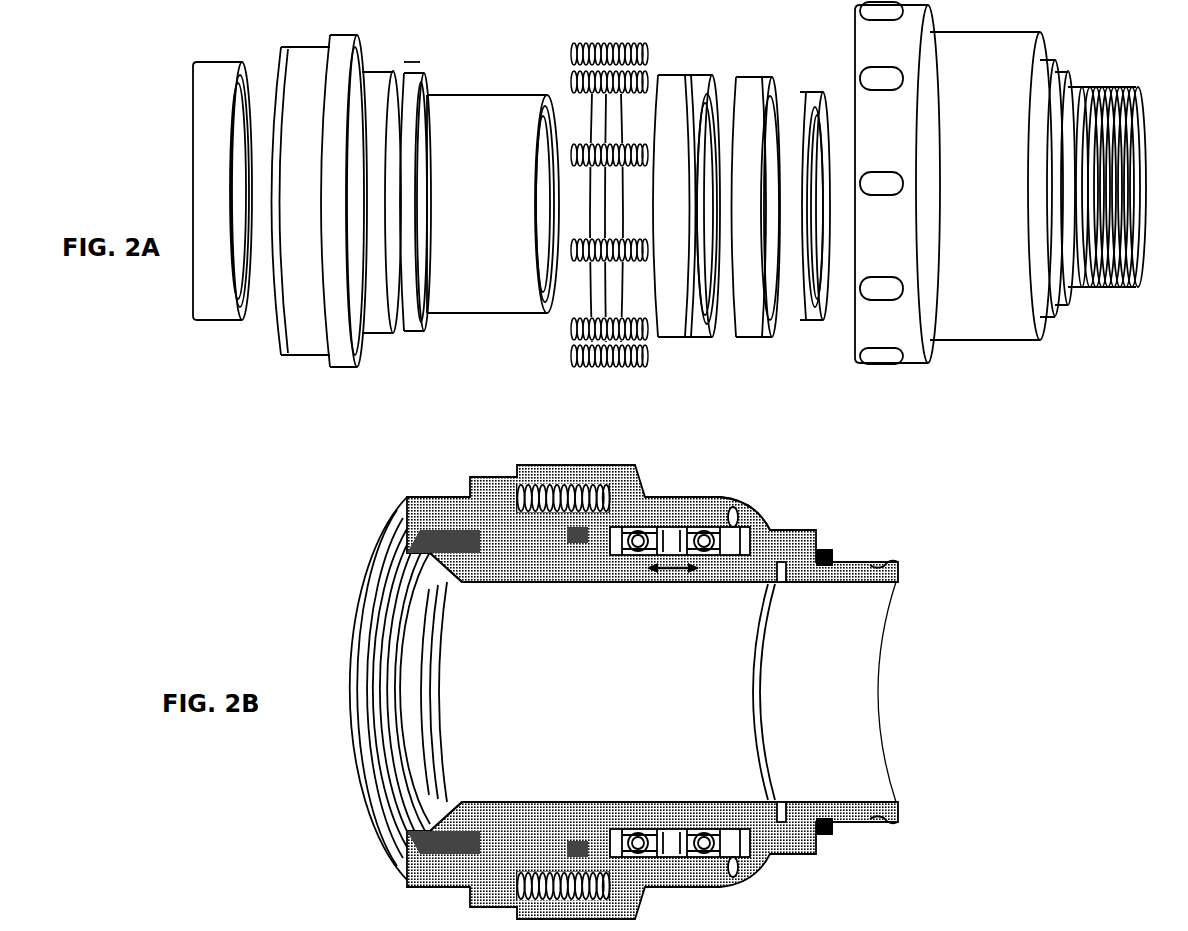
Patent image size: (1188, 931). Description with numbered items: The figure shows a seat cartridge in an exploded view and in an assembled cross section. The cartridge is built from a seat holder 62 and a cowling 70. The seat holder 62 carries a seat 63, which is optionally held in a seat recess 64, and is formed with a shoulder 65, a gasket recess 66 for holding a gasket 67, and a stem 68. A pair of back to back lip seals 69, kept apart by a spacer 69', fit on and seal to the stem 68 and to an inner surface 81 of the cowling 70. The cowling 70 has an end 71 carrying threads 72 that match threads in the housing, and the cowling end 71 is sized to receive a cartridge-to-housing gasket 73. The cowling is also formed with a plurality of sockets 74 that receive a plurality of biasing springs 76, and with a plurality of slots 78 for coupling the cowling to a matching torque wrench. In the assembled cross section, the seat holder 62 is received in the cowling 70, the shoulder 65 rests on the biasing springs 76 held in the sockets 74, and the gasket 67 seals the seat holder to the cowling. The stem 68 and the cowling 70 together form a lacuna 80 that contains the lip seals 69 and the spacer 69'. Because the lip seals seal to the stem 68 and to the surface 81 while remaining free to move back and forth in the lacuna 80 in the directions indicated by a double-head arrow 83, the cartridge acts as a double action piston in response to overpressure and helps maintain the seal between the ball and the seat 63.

In FIG. 2A, the seat holder 62 is at (372, 286).
In FIG. 2B, the seat holder 62 is at (509, 551).
In FIG. 2A, the seat 63 is at (207, 283).
In FIG. 2B, the seat 63 is at (460, 578).
In FIG. 2B, the seat recess 64 is at (462, 582).
In FIG. 2A, the shoulder 65 is at (362, 352).
In FIG. 2B, the shoulder 65 is at (498, 492).
In FIG. 2A, the gasket recess 66 is at (403, 73).
In FIG. 2A, the gasket 67 is at (597, 283).
In FIG. 2B, the gasket 67 is at (550, 490).
In FIG. 2A, the stem 68 is at (460, 261).
In FIG. 2B, the stem 68 is at (617, 569).
In FIG. 2A, the lip seals 69 is at (710, 273).
In FIG. 2B, the lip seals 69 is at (680, 653).
In FIG. 2A, the spacer 69' is at (696, 248).
In FIG. 2A, the cowling 70 is at (880, 218).
In FIG. 2B, the cowling 70 is at (772, 530).
In FIG. 2A, the cowling end 71 is at (1073, 345).
In FIG. 2B, the cowling end 71 is at (843, 589).
In FIG. 2A, the threads 72 is at (1113, 287).
In FIG. 2A, the cartridge-to-housing gasket 73 is at (848, 463).
In FIG. 2B, the cartridge-to-housing gasket 73 is at (831, 549).
In FIG. 2B, the sockets 74 is at (543, 513).
In FIG. 2A, the biasing springs 76 is at (623, 357).
In FIG. 2B, the biasing springs 76 is at (590, 487).
In FIG. 2A, the slots 78 is at (888, 185).
In FIG. 2B, the lacuna 80 is at (745, 560).
In FIG. 2B, the inner surface 81 is at (737, 527).
In FIG. 2B, the double-head arrow 83 is at (667, 572).